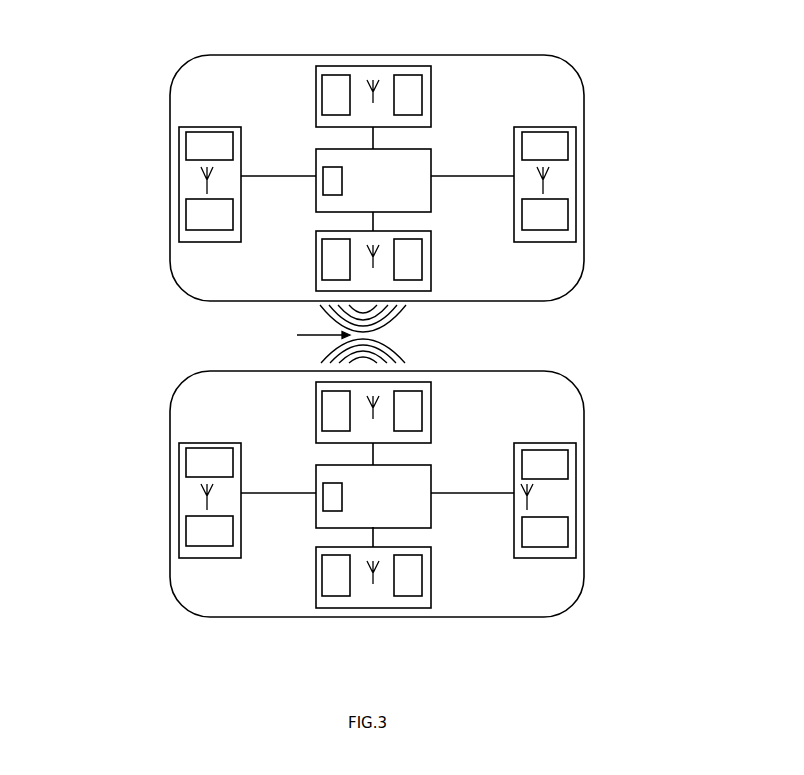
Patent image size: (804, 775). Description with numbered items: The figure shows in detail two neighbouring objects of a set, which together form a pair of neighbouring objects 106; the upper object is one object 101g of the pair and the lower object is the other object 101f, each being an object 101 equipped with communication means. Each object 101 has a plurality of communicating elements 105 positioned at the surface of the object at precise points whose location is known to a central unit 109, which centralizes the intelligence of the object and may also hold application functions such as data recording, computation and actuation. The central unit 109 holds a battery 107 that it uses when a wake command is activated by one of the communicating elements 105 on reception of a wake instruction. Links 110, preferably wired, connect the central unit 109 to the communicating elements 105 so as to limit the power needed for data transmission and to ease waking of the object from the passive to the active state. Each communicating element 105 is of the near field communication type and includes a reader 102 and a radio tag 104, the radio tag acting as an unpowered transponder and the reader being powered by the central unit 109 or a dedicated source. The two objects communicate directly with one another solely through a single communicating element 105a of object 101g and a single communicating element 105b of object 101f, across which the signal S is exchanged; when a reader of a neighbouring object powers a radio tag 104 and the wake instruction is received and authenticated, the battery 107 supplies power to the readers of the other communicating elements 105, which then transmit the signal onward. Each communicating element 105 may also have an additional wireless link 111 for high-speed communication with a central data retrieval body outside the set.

The object 101 is at (430, 178).
The object of pair of neighbouring objects 101g is at (585, 250).
The other object of pair of neighbouring objects 101f is at (583, 562).
The reader 102 is at (185, 527).
The radio tag 104 is at (185, 457).
The communicating element 105 is at (178, 212).
The communicating element of one object 105a is at (406, 291).
The communicating element of other object 105b is at (425, 382).
The pair of neighbouring objects 106 is at (146, 344).
The battery 107 is at (322, 190).
The central unit 109 is at (432, 158).
The link 110 is at (458, 495).
The additional wireless link 111 is at (205, 497).